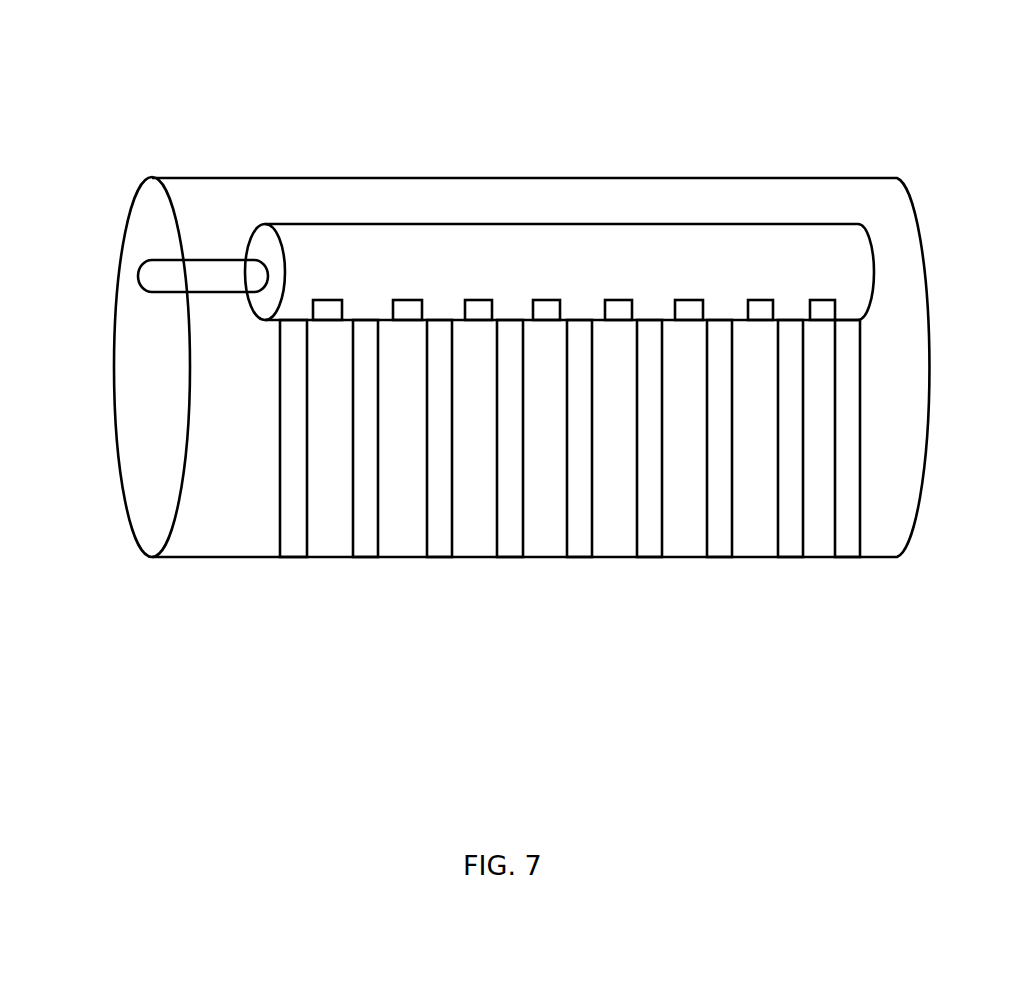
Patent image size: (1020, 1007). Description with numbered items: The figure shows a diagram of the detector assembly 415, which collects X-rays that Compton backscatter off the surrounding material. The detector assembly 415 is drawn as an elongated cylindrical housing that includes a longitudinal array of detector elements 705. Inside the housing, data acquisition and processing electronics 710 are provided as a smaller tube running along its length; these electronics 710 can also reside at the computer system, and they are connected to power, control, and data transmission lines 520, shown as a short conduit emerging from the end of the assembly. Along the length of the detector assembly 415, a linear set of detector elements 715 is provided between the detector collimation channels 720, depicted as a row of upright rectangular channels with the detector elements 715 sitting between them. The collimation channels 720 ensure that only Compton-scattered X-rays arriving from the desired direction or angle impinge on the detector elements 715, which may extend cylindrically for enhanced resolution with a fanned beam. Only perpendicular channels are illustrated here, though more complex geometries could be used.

The detector assembly 415 is at (193, 96).
The power, control, and data transmission lines 520 is at (147, 272).
The longitudinal array of detector elements 705 is at (808, 198).
The data acquisition and processing electronics 710 is at (360, 247).
The detector elements 715 is at (303, 314).
The detector collimation channels 720 is at (333, 552).